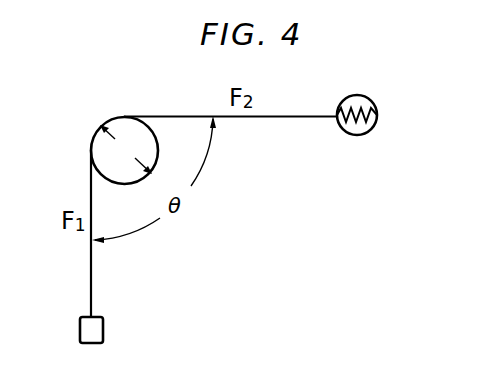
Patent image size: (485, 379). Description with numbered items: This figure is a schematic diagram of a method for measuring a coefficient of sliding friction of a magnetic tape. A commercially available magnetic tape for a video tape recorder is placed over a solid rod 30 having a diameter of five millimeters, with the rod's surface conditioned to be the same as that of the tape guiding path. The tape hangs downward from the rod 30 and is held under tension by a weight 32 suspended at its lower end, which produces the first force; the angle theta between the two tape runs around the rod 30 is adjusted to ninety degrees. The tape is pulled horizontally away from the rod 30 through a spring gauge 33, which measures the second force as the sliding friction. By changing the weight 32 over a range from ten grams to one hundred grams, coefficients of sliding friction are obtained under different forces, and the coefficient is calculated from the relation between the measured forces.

The solid rod 30 is at (127, 117).
The weight 32 is at (104, 322).
The spring gauge 33 is at (376, 106).